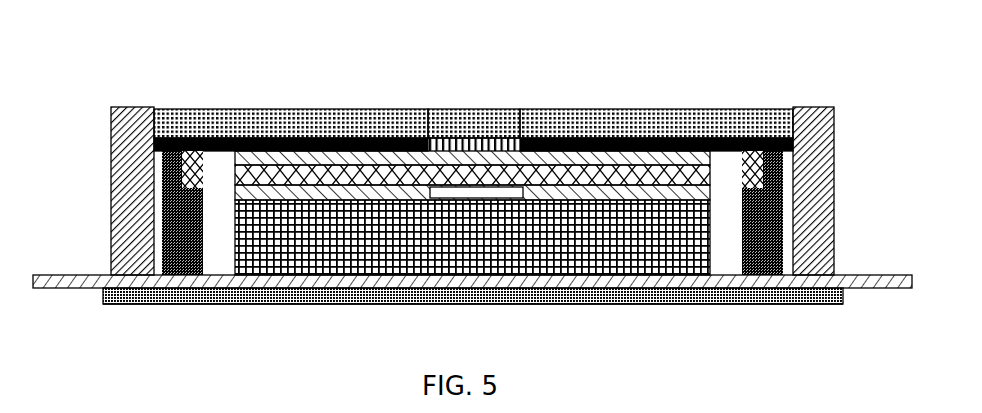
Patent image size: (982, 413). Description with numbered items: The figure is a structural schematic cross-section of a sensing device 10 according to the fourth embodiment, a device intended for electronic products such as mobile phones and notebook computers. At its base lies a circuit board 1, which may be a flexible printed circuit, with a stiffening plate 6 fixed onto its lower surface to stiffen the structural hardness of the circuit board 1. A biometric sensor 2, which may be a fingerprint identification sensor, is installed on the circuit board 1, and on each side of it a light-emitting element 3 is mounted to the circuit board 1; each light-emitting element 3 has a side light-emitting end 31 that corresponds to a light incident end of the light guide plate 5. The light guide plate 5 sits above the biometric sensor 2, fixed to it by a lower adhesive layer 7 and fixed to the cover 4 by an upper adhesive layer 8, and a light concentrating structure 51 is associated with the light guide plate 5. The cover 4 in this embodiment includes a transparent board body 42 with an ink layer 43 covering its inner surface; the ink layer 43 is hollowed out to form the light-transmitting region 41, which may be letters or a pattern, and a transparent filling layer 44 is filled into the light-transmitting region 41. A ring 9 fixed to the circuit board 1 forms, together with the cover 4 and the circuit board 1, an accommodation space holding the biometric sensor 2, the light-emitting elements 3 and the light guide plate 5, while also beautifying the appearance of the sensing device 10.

The circuit board 1 is at (880, 275).
The biometric sensor 2 is at (677, 276).
The light-emitting element 3 is at (203, 227).
The side light-emitting end 31 is at (203, 178).
The cover 4 is at (700, 100).
The light-transmitting region 41 is at (502, 138).
The transparent board body 42 is at (448, 117).
The ink layer 43 is at (190, 135).
The transparent filling layer 44 is at (467, 140).
The light guide plate 5 is at (318, 138).
The light concentrating structure 51 is at (530, 138).
The stiffening plate 6 is at (508, 303).
The lower adhesive layer 7 is at (280, 198).
The upper adhesive layer 8 is at (583, 137).
The ring 9 is at (112, 175).
The sensing device 10 is at (808, 67).